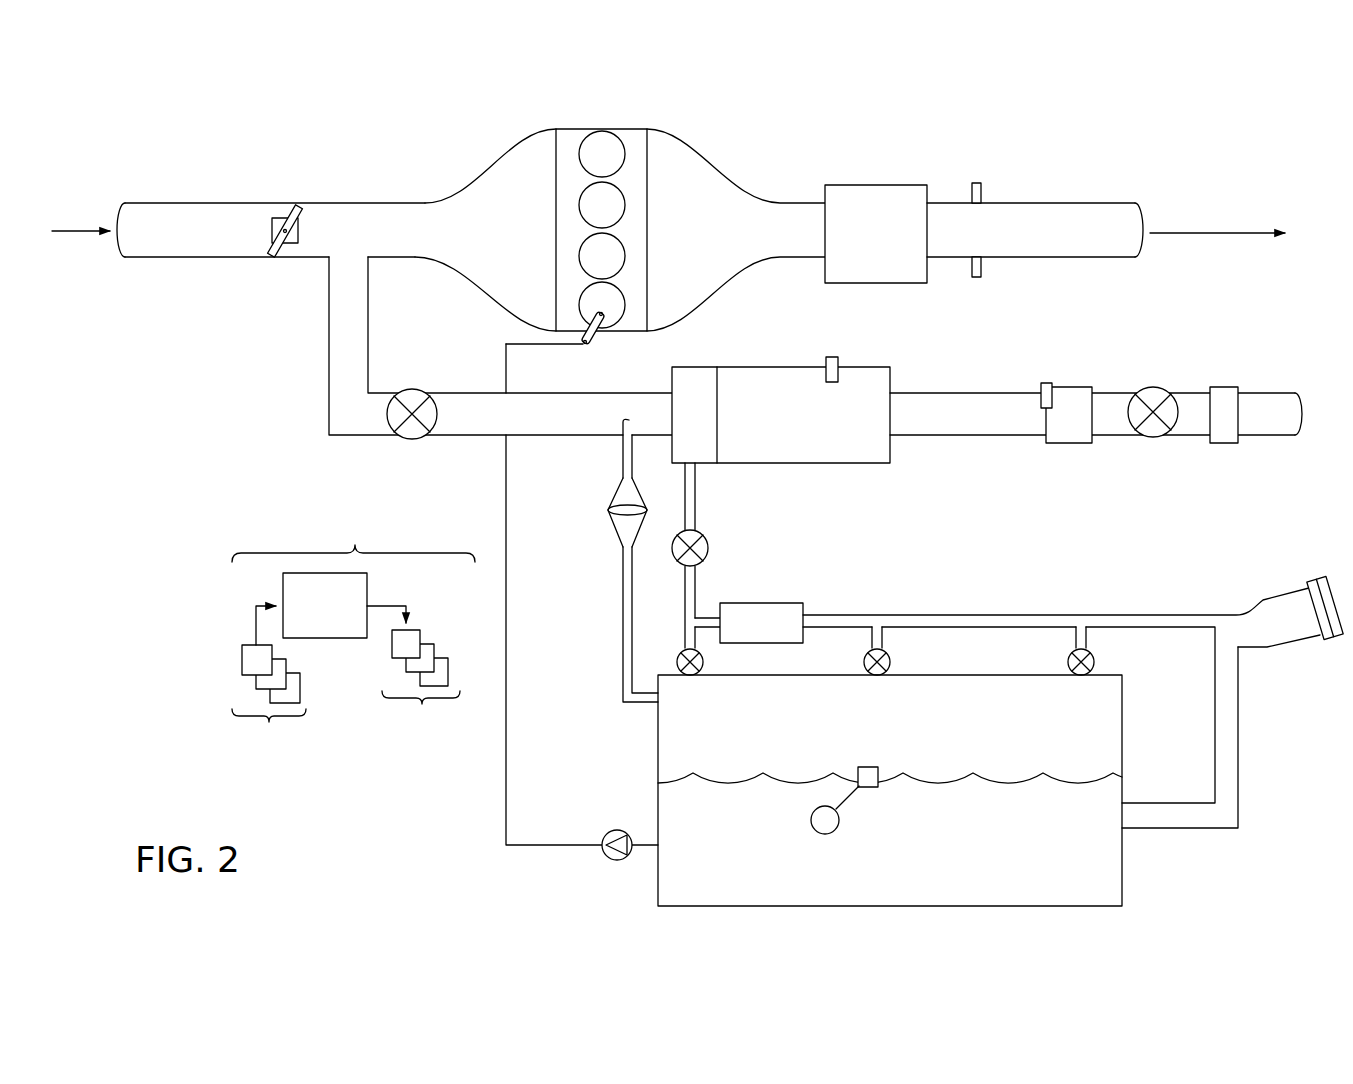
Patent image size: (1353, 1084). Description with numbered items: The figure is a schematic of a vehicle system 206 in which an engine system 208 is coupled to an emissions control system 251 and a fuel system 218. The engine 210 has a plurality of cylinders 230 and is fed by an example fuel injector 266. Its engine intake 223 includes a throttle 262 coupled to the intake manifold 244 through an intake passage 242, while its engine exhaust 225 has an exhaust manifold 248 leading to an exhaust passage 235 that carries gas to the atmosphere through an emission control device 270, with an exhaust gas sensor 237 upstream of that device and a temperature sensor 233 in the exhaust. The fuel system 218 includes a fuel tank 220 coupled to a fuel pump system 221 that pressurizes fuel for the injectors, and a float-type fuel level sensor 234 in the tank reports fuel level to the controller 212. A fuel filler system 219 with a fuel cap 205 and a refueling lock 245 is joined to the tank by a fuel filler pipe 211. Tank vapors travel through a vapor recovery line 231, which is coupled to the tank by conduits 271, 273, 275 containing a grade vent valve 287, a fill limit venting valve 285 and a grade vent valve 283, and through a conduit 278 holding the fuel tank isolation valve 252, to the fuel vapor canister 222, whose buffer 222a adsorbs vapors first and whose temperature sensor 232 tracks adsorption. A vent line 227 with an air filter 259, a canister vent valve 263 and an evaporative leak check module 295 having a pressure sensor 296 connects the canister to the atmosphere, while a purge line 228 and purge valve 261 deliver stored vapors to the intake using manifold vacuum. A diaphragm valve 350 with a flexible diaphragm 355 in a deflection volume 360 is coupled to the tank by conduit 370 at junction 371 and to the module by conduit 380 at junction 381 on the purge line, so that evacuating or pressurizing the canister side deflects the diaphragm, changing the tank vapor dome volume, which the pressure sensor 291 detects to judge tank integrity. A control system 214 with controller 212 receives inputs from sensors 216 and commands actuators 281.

The fuel cap 205 is at (1318, 578).
The vehicle system 206 is at (141, 131).
The engine system 208 is at (944, 125).
The engine 210 is at (648, 213).
The fuel filler pipe 211 is at (1238, 720).
The controller 212 is at (325, 605).
The control system 214 is at (353, 532).
The sensors 216 is at (269, 684).
The fuel system 218 is at (1172, 868).
The fuel filler system 219 is at (1290, 576).
The fuel tank 220 is at (1124, 770).
The fuel pump system 221 is at (638, 820).
The fuel vapor canister 222 is at (891, 386).
The buffer 222a is at (700, 367).
The engine intake 223 is at (484, 152).
The engine exhaust 225 is at (818, 133).
The vent line 227 is at (1096, 414).
The purge line 228 is at (500, 346).
The cylinders 230 is at (624, 150).
The vapor recovery line 231 is at (1140, 615).
The temperature sensor 232 is at (829, 357).
The temperature sensor 233 is at (971, 272).
The fuel level sensor 234 is at (868, 767).
The exhaust passage 235 is at (1092, 203).
The exhaust gas sensor 237 is at (971, 191).
The intake passage 242 is at (328, 257).
The intake manifold 244 is at (485, 230).
The refueling lock 245 is at (1318, 640).
The exhaust manifold 248 is at (736, 230).
The emissions control system 251 is at (1286, 350).
The fuel tank isolation valve 252 is at (702, 562).
The air filter 259 is at (1225, 387).
The purge valve 261 is at (437, 376).
The throttle 262 is at (299, 232).
The canister vent valve 263 is at (1156, 387).
The fuel injector 266 is at (593, 347).
The emission control device 270 is at (880, 173).
The conduit 271 is at (698, 640).
The conduit 273 is at (871, 637).
The conduit 275 is at (1075, 636).
The conduit 278 is at (696, 498).
The actuators 281 is at (413, 677).
The grade vent valve 283 is at (1094, 658).
The fill limit venting valve 285 is at (890, 664).
The grade vent valve 287 is at (680, 651).
The pressure sensor 291 is at (804, 612).
The evaporative leak check module 295 is at (1068, 387).
The pressure sensor 296 is at (1045, 383).
The diaphragm valve 350 is at (577, 488).
The flexible diaphragm 355 is at (607, 514).
The deflection volume 360 is at (645, 496).
The conduit 370 is at (622, 458).
The junction 371 is at (622, 426).
The conduit 380 is at (622, 628).
The junction 381 is at (660, 700).